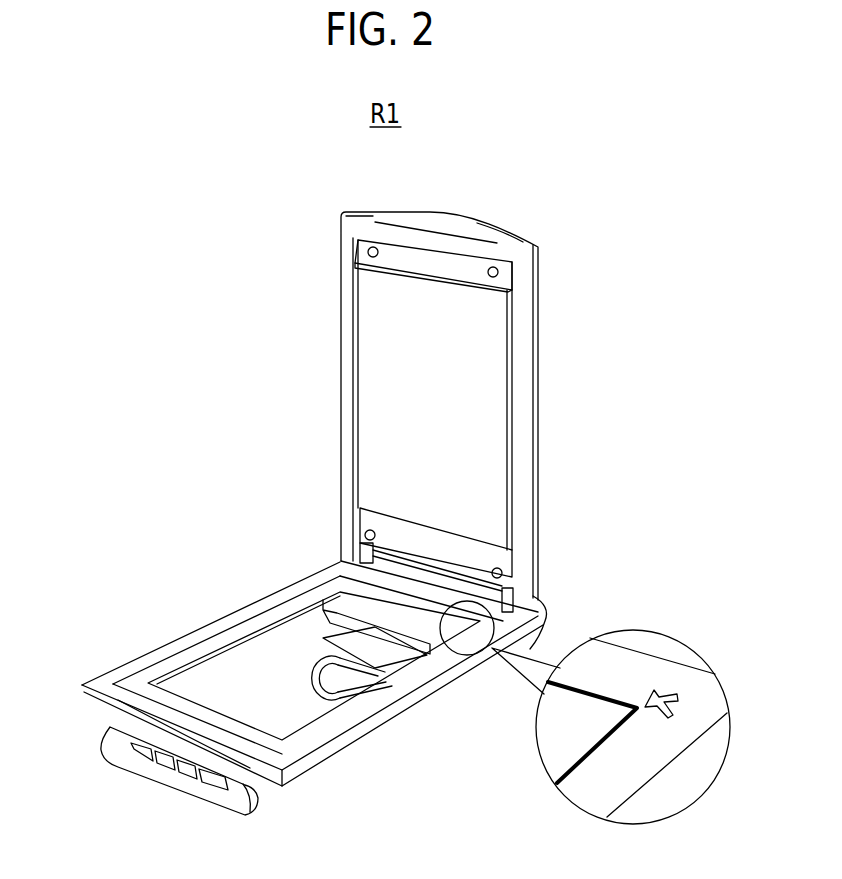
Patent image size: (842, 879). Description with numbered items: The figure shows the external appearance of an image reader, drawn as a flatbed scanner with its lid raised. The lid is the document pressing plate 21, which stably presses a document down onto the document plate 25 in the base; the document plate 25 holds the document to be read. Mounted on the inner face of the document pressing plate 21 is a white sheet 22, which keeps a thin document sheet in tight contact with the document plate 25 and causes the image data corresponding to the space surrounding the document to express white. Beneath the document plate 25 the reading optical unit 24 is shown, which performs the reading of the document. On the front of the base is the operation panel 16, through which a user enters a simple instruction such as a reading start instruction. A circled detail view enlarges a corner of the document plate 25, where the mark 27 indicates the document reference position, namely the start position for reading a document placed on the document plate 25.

The operation panel 16 is at (138, 768).
The document pressing plate 21 is at (353, 230).
The white sheet 22 is at (365, 350).
The reading optical unit 24 is at (340, 597).
The document plate 25 is at (263, 640).
The mark 27 is at (530, 603).